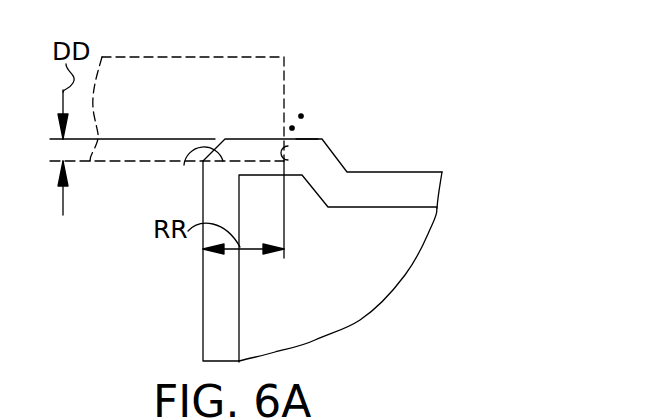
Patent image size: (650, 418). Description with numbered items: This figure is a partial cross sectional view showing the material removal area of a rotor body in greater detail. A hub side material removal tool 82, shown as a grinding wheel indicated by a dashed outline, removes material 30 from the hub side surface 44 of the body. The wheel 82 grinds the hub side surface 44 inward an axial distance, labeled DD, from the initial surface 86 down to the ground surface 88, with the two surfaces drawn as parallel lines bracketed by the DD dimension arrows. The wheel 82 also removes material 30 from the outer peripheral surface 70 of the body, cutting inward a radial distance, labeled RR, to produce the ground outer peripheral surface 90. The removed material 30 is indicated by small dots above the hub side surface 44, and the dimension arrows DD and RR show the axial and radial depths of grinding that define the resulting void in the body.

The outer peripheral surface 70 is at (203, 331).
The hub side material removal tool 82 is at (147, 57).
The initial surface 86 is at (255, 139).
The material 30 is at (315, 107).
The hub side surface 44 is at (322, 129).
The ground outer peripheral surface 90 is at (288, 160).
The ground surface 88 is at (184, 165).